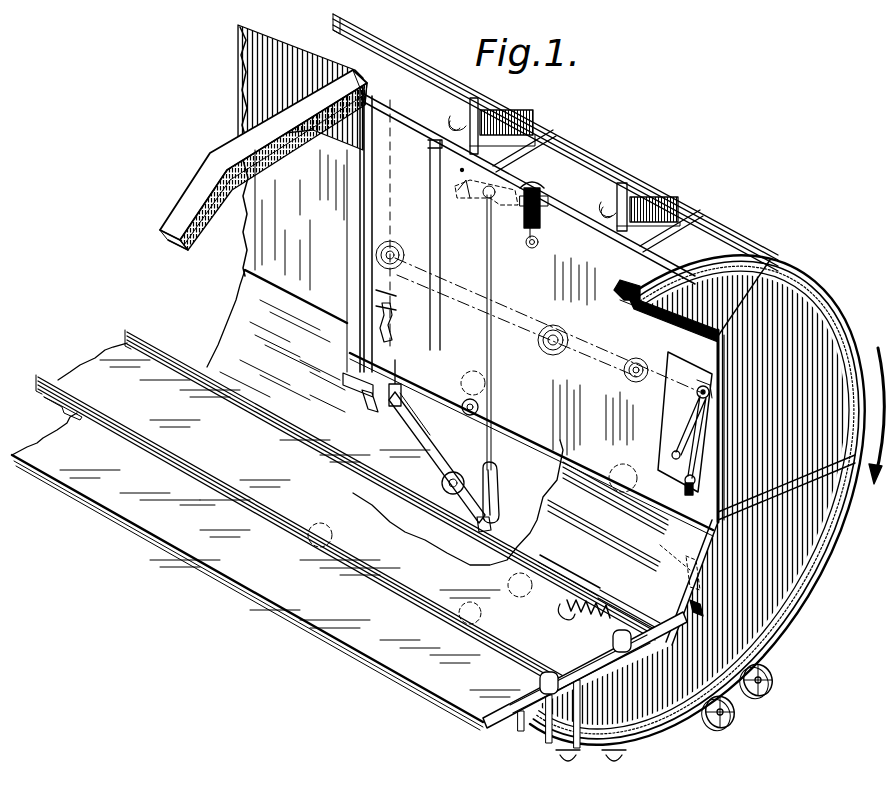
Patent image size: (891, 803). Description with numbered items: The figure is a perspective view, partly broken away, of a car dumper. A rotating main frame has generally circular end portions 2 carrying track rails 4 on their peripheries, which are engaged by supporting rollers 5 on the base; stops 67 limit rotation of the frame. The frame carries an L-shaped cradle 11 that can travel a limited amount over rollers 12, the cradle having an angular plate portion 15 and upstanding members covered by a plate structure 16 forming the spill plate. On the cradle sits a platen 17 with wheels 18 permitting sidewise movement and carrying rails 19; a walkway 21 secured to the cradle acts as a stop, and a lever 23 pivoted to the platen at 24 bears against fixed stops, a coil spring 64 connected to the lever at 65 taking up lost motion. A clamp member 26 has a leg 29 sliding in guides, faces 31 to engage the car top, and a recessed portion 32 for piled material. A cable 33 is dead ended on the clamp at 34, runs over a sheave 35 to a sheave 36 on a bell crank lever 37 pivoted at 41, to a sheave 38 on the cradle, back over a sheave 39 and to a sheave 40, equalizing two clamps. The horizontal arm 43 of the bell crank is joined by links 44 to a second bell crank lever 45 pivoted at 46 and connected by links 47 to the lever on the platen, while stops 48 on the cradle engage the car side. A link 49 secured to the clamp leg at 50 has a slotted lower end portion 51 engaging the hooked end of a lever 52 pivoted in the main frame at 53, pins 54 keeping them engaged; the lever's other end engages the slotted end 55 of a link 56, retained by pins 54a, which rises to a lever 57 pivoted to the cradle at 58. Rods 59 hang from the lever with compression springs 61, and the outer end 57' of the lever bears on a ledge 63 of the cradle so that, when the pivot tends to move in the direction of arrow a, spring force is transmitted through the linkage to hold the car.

The end portion 2 is at (835, 348).
The track rail 4 is at (783, 268).
The supporting roller 5 is at (738, 713).
The cradle 11 is at (290, 94).
The roller 12 is at (470, 128).
The angular plate portion 15 is at (236, 316).
The plate structure 16 is at (282, 220).
The platen 17 is at (265, 430).
The wheel 18 is at (482, 612).
The rail 19 is at (133, 332).
The walkway 21 is at (266, 536).
The lever 23 is at (585, 677).
The pivot 24 is at (602, 572).
The clamp member 26 is at (192, 186).
The leg 29 is at (360, 229).
The face 31 is at (176, 246).
The recessed portion 32 is at (312, 172).
The cable 33 is at (530, 298).
The dead end 34 is at (376, 290).
The sheave 35 is at (376, 255).
The sheave 36 is at (701, 385).
The bell crank lever 37 is at (686, 420).
The sheave 38 is at (630, 382).
The sheave 39 is at (678, 358).
The sheave 40 is at (553, 356).
The pivot 41 is at (672, 455).
The horizontal arm 43 is at (685, 480).
The link 44 is at (615, 498).
The second bell crank lever 45 is at (606, 535).
The pivot 46 is at (686, 566).
The link 47 is at (693, 608).
The stop 48 is at (428, 140).
The link 49 is at (382, 328).
The connection point 50 is at (376, 306).
The slotted lower end portion 51 is at (345, 378).
The lever 52 is at (432, 444).
The pivot 53 is at (446, 489).
The pin 54 is at (404, 398).
The pin 54a is at (484, 522).
The slotted end 55 is at (498, 489).
The link 56 is at (499, 449).
The lever 57 is at (532, 176).
The outer end of lever 57' is at (549, 189).
The pivot 58 is at (466, 193).
The rod 59 is at (530, 246).
The compression spring 61 is at (556, 218).
The ledge 63 is at (537, 190).
The coil spring 64 is at (540, 601).
The connection point 65 is at (629, 596).
The stop 67 is at (628, 282).
The arrow a is at (462, 170).